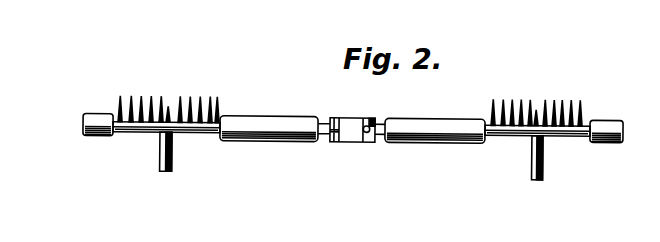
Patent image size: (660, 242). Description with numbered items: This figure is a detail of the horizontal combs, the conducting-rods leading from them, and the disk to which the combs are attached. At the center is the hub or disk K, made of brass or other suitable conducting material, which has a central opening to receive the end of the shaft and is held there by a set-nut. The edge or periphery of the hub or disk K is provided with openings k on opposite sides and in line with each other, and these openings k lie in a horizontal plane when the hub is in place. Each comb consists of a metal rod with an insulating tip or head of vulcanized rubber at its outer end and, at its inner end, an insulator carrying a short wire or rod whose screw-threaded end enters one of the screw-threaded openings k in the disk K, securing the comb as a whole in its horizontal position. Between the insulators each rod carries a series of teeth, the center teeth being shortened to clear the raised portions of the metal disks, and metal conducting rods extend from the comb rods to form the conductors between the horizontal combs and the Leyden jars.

The hub or disk K is at (352, 141).
The openings k is at (370, 116).